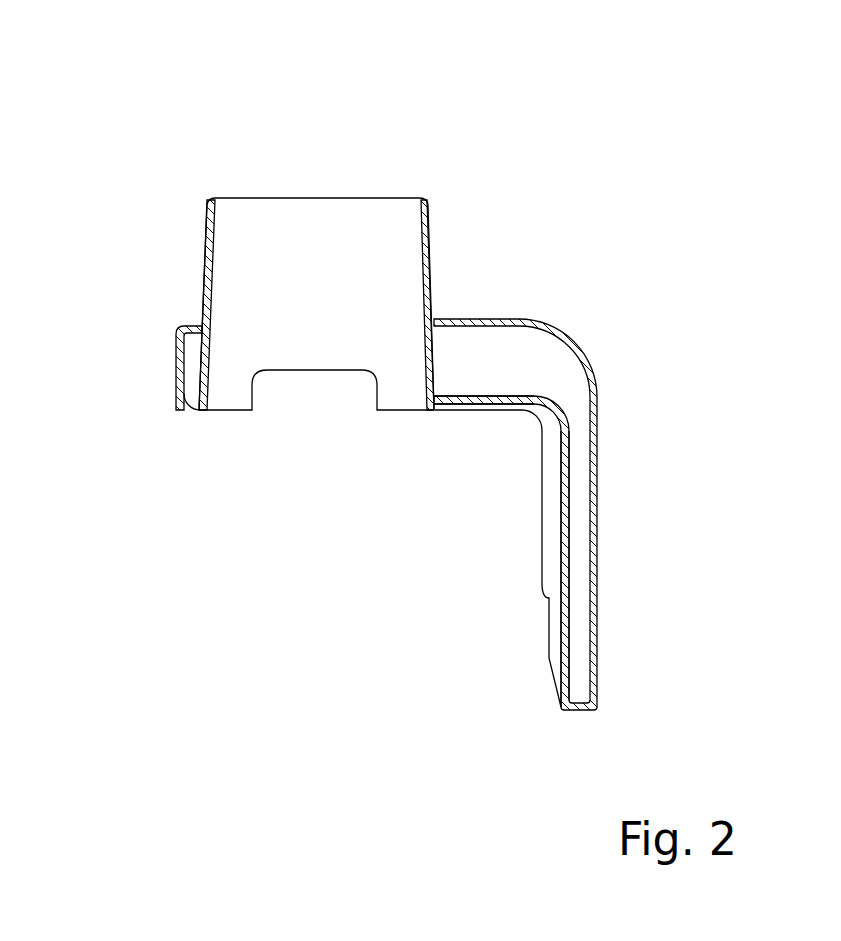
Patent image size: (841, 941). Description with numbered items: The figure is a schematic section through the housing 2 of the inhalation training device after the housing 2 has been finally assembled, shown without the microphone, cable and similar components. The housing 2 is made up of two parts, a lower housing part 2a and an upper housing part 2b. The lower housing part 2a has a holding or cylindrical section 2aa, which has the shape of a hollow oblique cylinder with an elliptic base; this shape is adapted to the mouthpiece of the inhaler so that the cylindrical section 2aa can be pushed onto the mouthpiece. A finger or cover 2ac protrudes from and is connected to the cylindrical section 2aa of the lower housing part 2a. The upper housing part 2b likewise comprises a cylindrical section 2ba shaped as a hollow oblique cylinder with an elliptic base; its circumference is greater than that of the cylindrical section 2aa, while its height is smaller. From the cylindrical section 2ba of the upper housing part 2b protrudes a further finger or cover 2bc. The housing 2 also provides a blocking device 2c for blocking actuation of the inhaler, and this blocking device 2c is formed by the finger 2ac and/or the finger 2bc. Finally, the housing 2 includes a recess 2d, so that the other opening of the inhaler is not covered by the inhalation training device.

The housing 2 is at (202, 94).
The lower housing part 2a is at (178, 244).
The cylindrical section 2aa is at (430, 248).
The finger 2ac is at (475, 400).
The upper housing part 2b is at (624, 489).
The cylindrical section 2ba is at (176, 369).
The finger 2bc is at (587, 360).
The blocking device 2c is at (528, 638).
The recess 2d is at (296, 371).